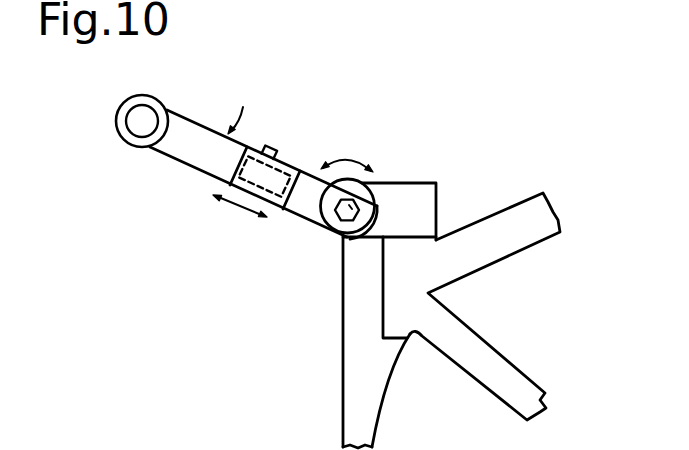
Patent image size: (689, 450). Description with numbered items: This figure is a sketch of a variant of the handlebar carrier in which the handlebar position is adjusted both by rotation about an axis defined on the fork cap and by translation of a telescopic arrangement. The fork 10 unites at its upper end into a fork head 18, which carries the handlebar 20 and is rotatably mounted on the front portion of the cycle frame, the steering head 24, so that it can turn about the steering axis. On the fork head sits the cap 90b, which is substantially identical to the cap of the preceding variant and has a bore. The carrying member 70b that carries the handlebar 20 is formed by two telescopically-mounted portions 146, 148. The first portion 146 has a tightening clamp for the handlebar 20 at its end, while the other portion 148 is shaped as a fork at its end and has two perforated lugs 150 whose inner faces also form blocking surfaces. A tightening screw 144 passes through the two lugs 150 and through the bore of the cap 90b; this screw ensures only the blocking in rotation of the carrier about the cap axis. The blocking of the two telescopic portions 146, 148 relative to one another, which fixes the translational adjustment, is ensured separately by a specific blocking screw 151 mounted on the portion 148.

The fork 10 is at (343, 383).
The fork head 18 is at (353, 304).
The handlebar 20 is at (120, 127).
The steering head 24 is at (420, 293).
The carrying member 70b is at (251, 104).
The cap 90b is at (437, 198).
The tightening screw 144 is at (381, 189).
The first portion 146 is at (195, 148).
The other portion 148 is at (303, 183).
The perforated lugs 150 is at (345, 239).
The blocking screw 151 is at (272, 142).